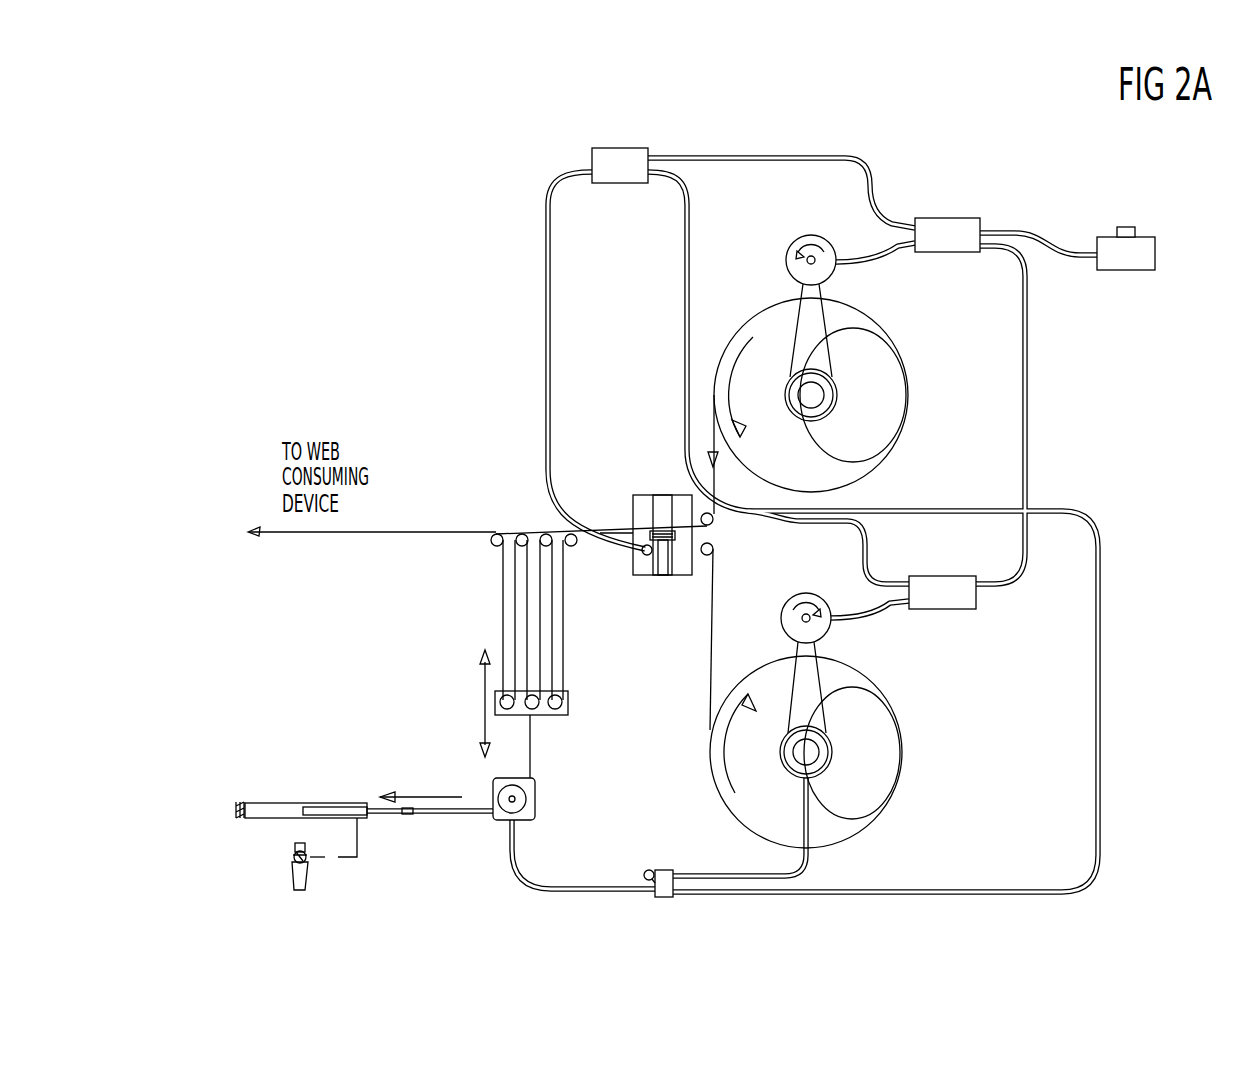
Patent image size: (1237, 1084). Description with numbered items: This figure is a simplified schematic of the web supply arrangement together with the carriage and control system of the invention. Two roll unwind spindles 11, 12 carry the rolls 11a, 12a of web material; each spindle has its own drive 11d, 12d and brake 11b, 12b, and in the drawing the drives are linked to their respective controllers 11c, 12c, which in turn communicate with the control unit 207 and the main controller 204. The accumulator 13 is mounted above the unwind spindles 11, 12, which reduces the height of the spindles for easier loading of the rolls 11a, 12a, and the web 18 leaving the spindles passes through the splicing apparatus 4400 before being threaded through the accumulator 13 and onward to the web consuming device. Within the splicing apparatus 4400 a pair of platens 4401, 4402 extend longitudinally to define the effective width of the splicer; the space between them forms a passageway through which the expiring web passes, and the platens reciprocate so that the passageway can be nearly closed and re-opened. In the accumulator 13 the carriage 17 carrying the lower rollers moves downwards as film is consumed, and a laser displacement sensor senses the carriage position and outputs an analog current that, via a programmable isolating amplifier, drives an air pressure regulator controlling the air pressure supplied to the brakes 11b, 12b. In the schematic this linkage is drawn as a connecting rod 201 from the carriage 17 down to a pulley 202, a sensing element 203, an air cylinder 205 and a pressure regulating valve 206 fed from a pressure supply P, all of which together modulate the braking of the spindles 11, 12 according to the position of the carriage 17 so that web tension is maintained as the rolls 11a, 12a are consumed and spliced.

The roll unwind spindle 11 is at (817, 372).
The roll 11a is at (770, 305).
The brake 11b is at (875, 461).
The first drive controller 11c is at (982, 222).
The drive 11d is at (790, 252).
The roll unwind spindle 12 is at (815, 730).
The roll 12a is at (770, 660).
The brake 12b is at (873, 820).
The second drive controller 12c is at (980, 600).
The drive 12d is at (790, 607).
The accumulator 13 is at (488, 591).
The carriage 17 is at (570, 700).
The web 18 is at (612, 532).
The connecting rod 201 is at (533, 752).
The pulley 202 is at (538, 794).
The sensor 203 is at (662, 870).
The main controller 204 is at (1157, 255).
The air cylinder 205 is at (347, 803).
The pressure regulating valve 206 is at (292, 867).
The control unit 207 is at (622, 148).
The splicing apparatus 4400 is at (620, 568).
The platen 4401 is at (663, 576).
The platen 4402 is at (660, 495).
The pressure supply P is at (323, 858).